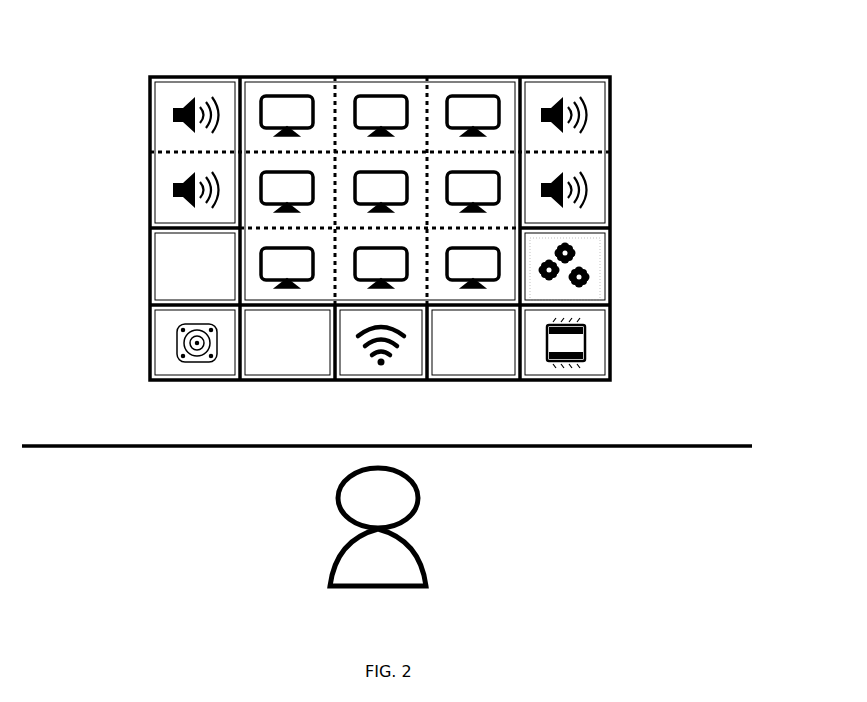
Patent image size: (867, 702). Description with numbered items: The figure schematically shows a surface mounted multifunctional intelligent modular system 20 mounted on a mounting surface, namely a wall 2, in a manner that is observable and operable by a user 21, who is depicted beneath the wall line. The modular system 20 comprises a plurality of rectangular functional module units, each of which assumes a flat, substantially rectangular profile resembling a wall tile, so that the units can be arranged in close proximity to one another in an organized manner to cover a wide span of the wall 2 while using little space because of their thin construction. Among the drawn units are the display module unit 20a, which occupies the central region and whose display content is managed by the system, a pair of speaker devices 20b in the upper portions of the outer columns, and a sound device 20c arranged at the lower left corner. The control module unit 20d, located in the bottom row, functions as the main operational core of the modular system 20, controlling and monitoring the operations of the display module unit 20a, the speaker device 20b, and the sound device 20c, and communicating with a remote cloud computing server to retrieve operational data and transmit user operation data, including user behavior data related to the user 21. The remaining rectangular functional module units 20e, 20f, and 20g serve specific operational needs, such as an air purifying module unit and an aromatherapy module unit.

The wall 2 is at (126, 48).
The surface mounted multifunctional intelligent modular system 20 is at (270, 74).
The display module unit 20a is at (383, 77).
The speaker device 20b is at (147, 121).
The sound device 20c is at (145, 342).
The control module unit 20d is at (383, 385).
The functional module unit 20e is at (617, 345).
The functional module unit 20f is at (617, 267).
The functional module unit 20g is at (620, 200).
The user 21 is at (425, 525).